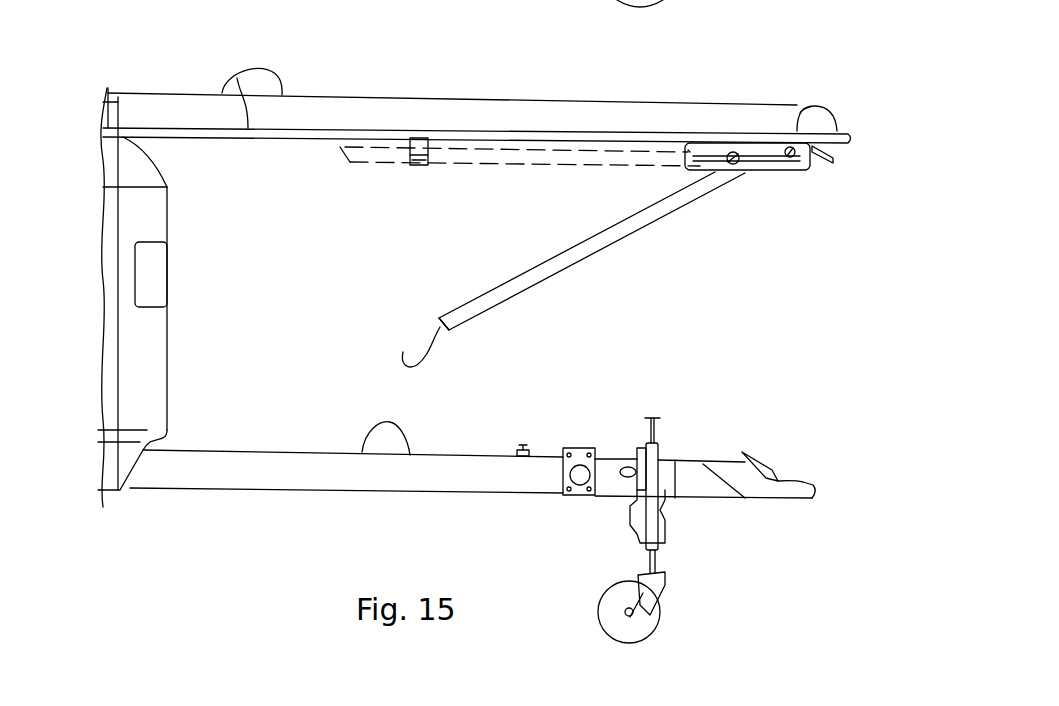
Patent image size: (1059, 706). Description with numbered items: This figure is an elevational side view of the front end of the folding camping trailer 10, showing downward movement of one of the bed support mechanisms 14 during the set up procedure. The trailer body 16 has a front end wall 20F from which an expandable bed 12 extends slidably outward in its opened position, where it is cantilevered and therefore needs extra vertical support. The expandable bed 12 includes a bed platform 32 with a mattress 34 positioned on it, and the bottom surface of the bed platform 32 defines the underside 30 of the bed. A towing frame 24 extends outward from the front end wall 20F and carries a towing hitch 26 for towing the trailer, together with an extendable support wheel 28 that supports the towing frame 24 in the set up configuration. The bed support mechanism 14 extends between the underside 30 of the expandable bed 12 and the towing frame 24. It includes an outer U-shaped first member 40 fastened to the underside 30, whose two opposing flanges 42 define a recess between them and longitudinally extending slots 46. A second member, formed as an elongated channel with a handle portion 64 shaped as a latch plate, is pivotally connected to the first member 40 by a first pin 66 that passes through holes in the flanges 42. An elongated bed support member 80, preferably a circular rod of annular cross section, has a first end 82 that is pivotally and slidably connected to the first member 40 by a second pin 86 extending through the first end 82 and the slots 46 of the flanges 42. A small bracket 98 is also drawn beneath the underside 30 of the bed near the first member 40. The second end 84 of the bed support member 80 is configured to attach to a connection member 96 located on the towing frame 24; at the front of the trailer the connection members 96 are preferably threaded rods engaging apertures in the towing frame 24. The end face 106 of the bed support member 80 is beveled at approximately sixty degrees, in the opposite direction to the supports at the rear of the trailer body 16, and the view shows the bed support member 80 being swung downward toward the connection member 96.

The folding camping trailer 10 is at (373, 88).
The expandable bed 12 is at (841, 111).
The bed support mechanism 14 is at (738, 228).
The trailer body 16 is at (148, 320).
The front end wall 20F is at (168, 393).
The towing frame 24 is at (374, 424).
The towing hitch 26 is at (797, 427).
The extendable support wheel 28 is at (710, 537).
The underside 30 is at (327, 141).
The bed platform 32 is at (803, 112).
The mattress 34 is at (224, 74).
The first member 40 is at (685, 155).
The flanges 42 is at (700, 147).
The slots 46 is at (765, 158).
The handle portion 64 is at (822, 162).
The first pin 66 is at (788, 158).
The bed support member 80 is at (540, 265).
The first end 82 is at (731, 148).
The second end 84 is at (448, 312).
The second pin 86 is at (740, 168).
The connection member 96 is at (527, 450).
The clip 98 is at (428, 152).
The end face 106 is at (403, 343).